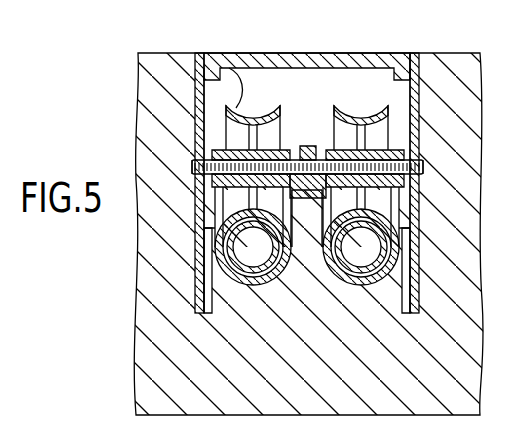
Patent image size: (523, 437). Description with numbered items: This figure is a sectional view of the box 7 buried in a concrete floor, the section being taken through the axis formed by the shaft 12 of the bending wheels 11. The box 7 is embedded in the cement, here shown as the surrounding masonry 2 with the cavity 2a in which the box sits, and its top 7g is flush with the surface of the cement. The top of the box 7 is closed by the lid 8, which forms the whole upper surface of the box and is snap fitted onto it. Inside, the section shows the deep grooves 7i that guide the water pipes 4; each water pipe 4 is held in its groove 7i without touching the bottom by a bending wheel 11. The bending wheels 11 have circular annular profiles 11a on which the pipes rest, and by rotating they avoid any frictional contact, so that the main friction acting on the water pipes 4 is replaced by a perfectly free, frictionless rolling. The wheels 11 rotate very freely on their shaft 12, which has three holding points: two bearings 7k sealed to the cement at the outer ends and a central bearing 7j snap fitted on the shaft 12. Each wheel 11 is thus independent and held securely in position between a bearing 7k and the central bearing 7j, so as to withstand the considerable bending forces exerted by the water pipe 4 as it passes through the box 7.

The block 2 is at (158, 60).
The cavity 2a is at (197, 56).
The water pipe 4 is at (272, 280).
The box 7 is at (419, 104).
The top of the box 7g is at (414, 53).
The deep groove 7i is at (207, 285).
The central bearing 7j is at (303, 146).
The bearing 7k is at (194, 178).
The lid 8 is at (390, 53).
The bending wheel 11 is at (333, 105).
The circular annular profile 11a is at (231, 65).
The shaft 12 is at (426, 162).